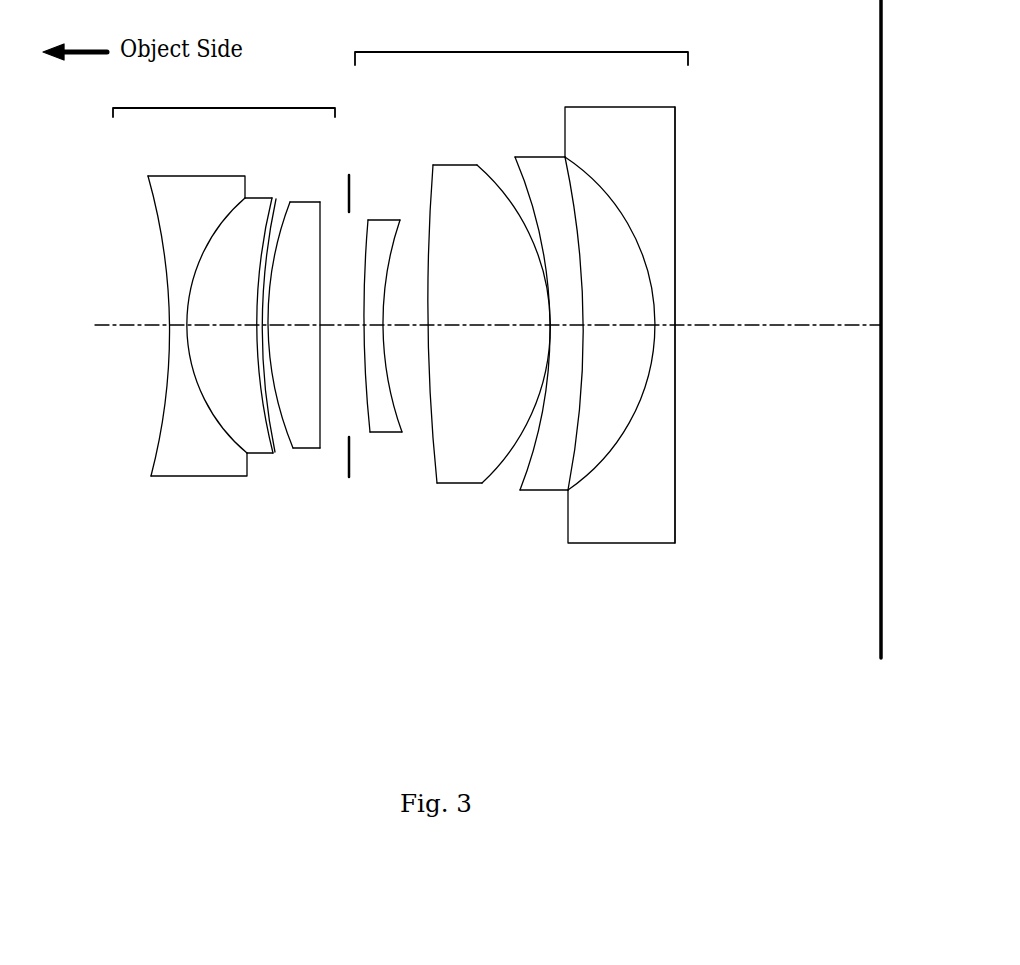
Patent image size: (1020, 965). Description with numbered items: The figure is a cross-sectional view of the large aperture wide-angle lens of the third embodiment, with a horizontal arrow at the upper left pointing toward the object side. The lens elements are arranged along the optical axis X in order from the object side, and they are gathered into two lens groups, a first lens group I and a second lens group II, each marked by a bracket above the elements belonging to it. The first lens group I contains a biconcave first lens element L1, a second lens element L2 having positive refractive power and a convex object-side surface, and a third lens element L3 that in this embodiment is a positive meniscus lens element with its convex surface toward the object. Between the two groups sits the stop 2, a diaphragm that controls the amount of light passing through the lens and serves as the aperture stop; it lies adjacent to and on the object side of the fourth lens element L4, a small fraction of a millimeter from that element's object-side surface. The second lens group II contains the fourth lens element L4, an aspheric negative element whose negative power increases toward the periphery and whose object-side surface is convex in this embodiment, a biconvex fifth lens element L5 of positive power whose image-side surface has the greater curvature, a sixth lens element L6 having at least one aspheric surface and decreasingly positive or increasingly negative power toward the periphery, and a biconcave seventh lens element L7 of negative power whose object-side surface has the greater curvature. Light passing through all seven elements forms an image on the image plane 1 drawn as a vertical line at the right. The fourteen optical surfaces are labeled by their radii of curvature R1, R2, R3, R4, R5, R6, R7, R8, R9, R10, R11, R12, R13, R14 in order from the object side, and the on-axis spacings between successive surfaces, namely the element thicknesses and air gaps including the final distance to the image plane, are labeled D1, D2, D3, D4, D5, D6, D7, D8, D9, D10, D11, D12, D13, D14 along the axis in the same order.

The image plane 1 is at (878, 20).
The stop 2 is at (352, 183).
The optical axis X is at (108, 325).
The first lens group I is at (224, 98).
The second lens group II is at (521, 44).
The first lens element L1 is at (177, 302).
The second lens element L2 is at (271, 296).
The third lens element L3 is at (309, 325).
The fourth lens element L4 is at (420, 296).
The fifth lens element L5 is at (477, 300).
The sixth lens element L6 is at (570, 288).
The seventh lens element L7 is at (651, 303).
The radius of curvature of first optical surface R1 is at (157, 215).
The radius of curvature of second optical surface R2 is at (198, 268).
The radius of curvature of third optical surface R3 is at (267, 227).
The radius of curvature of fourth optical surface R4 is at (282, 210).
The radius of curvature of fifth optical surface R5 is at (319, 274).
The radius of curvature of sixth optical surface R6 is at (350, 462).
The radius of curvature of seventh optical surface R7 is at (363, 313).
The radius of curvature of eighth optical surface R8 is at (385, 332).
The radius of curvature of ninth optical surface R9 is at (425, 242).
The radius of curvature of tenth optical surface R10 is at (501, 184).
The radius of curvature of eleventh optical surface R11 is at (548, 302).
The radius of curvature of twelfth optical surface R12 is at (586, 320).
The radius of curvature of thirteenth optical surface R13 is at (613, 202).
The radius of curvature of fourteenth optical surface R14 is at (677, 236).
The on-axis surface spacing D1 is at (178, 332).
The on-axis surface spacing D2 is at (240, 303).
The on-axis surface spacing D3 is at (257, 328).
The on-axis surface spacing D4 is at (293, 310).
The on-axis surface spacing D5 is at (348, 332).
The on-axis surface spacing D6 is at (352, 324).
The on-axis surface spacing D7 is at (400, 331).
The on-axis surface spacing D8 is at (398, 323).
The on-axis surface spacing D9 is at (474, 321).
The on-axis surface spacing D10 is at (548, 329).
The on-axis surface spacing D11 is at (585, 330).
The on-axis surface spacing D12 is at (592, 324).
The on-axis surface spacing D13 is at (678, 325).
The on-axis surface spacing D14 is at (785, 325).